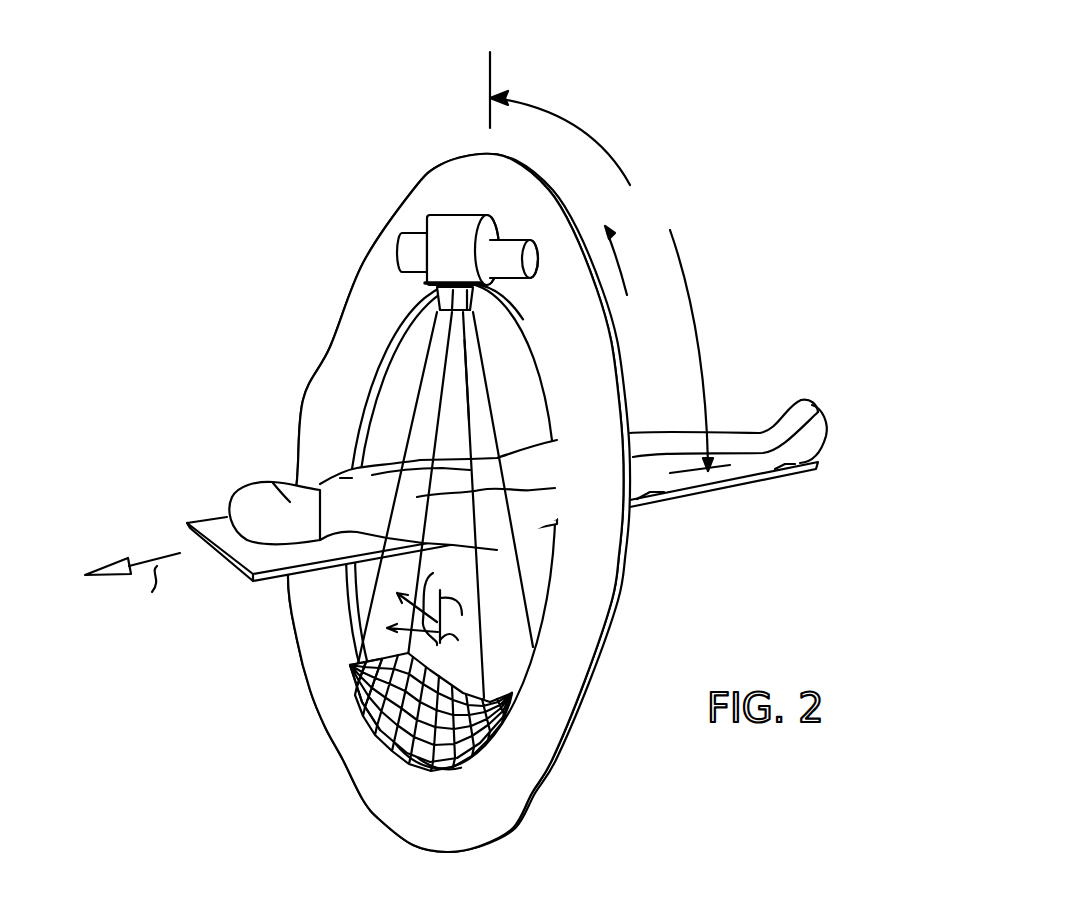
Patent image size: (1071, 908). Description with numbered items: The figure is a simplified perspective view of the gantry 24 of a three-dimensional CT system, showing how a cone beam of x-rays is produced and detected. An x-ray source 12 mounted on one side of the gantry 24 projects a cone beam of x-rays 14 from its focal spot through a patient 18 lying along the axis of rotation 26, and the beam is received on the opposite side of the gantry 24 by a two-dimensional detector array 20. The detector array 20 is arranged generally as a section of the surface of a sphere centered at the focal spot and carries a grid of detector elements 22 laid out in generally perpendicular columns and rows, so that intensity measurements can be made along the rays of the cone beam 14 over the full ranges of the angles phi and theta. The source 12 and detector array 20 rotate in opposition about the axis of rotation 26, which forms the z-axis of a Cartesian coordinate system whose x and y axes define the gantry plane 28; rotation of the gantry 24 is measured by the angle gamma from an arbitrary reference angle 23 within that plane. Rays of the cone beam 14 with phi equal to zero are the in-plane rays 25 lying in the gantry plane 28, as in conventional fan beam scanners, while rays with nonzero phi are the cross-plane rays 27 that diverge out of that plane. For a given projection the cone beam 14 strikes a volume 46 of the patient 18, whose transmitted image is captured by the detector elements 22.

The x-ray source 12 is at (457, 237).
The cone beam of x-rays 14 is at (488, 352).
The patient 18 is at (229, 478).
The two-dimensional detector array 20 is at (500, 735).
The detector elements 22 is at (378, 708).
The reference angle 23 is at (493, 77).
The gantry 24 is at (590, 613).
The in-plane rays 25 is at (431, 611).
The axis of rotation 26 is at (150, 560).
The cross-plane rays 27 is at (480, 650).
The gantry plane 28 is at (576, 346).
The volume 46 is at (498, 538).